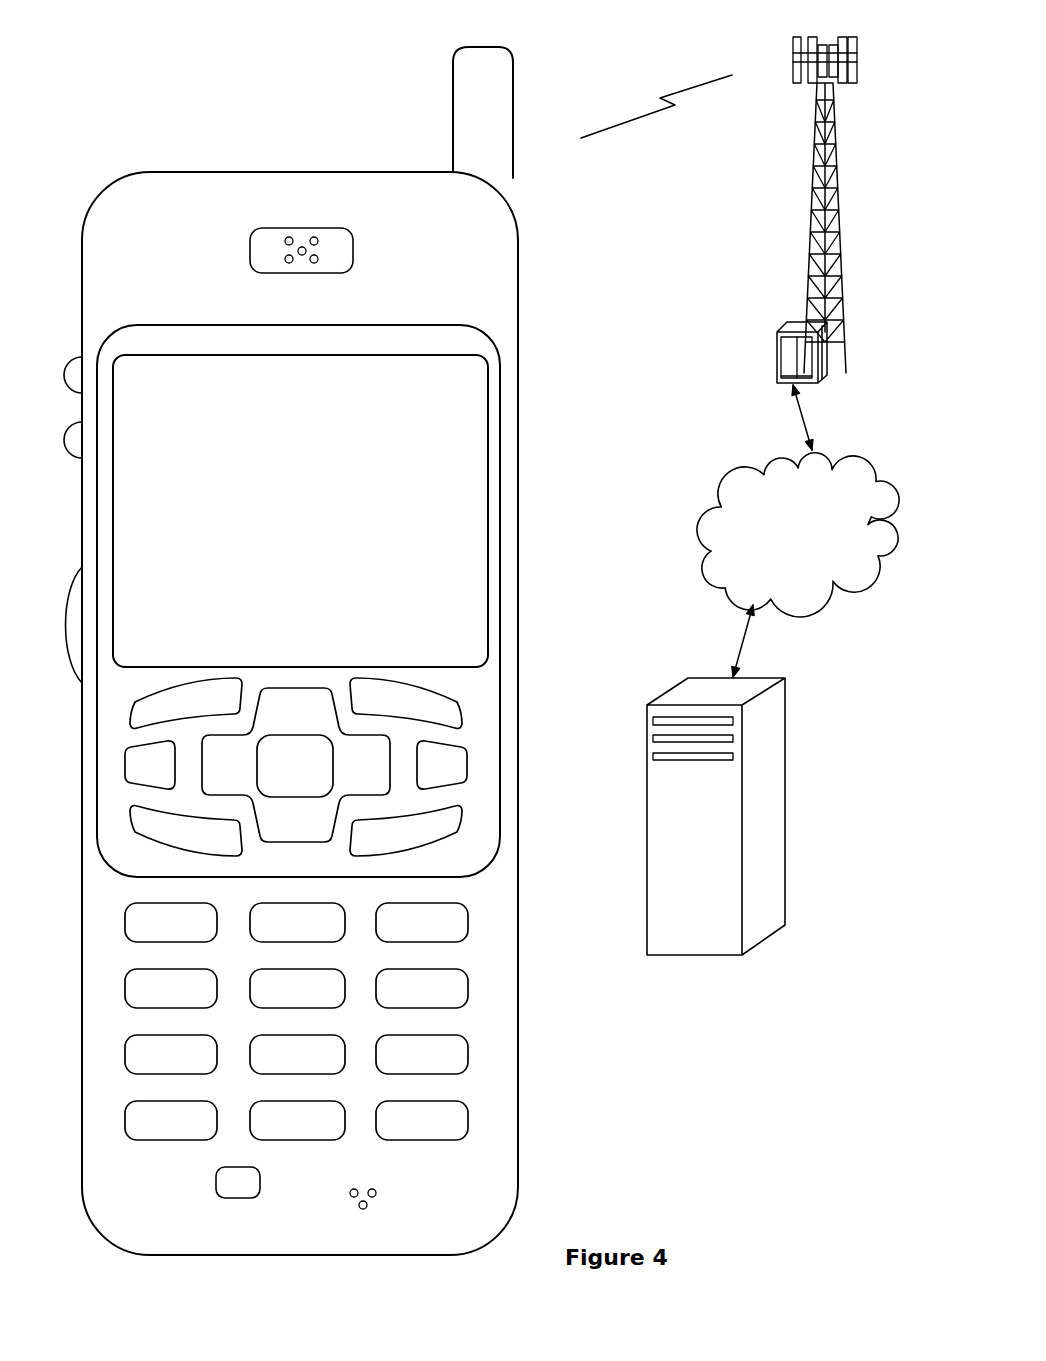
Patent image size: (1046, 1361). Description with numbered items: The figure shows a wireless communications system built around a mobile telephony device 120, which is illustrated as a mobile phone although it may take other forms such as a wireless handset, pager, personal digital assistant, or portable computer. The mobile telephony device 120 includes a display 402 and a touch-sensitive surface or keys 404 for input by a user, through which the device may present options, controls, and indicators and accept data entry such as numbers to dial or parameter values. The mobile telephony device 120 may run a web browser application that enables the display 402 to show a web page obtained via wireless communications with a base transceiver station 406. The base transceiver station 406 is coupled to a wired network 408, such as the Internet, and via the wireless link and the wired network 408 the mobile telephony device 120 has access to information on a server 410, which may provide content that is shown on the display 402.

The mobile telephony device 120 is at (132, 1256).
The display 402 is at (490, 368).
The keys 404 is at (530, 1150).
The base transceiver station 406 is at (810, 227).
The wired network 408 is at (727, 589).
The server 410 is at (690, 955).